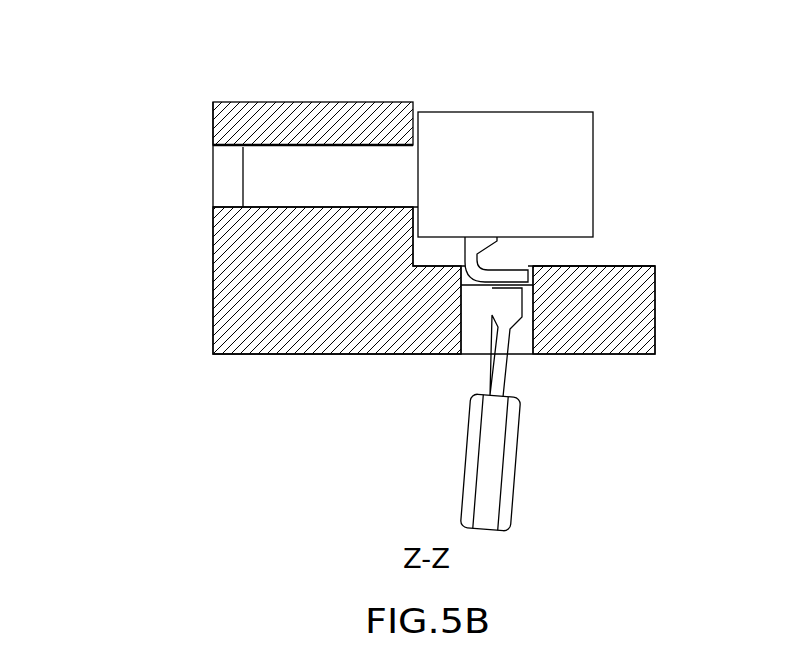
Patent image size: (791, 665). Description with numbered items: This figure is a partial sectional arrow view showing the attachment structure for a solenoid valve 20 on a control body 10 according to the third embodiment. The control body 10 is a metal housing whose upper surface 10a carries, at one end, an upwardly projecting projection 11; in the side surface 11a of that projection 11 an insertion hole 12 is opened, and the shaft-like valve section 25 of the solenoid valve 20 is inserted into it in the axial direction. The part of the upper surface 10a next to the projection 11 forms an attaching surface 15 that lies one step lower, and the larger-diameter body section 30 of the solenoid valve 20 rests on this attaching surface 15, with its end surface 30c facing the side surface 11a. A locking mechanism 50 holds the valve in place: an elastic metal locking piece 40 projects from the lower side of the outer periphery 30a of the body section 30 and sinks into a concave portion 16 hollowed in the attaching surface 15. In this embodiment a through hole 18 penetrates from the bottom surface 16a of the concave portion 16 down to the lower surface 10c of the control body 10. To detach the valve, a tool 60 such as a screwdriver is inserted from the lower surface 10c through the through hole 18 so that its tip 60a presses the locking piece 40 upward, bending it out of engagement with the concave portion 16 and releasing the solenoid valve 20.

The control body 10 is at (429, 271).
The upper surface 10a is at (573, 266).
The lower surface 10c is at (612, 355).
The projection 11 is at (323, 105).
The side surface 11a is at (414, 108).
The insertion hole 12 is at (231, 146).
The attaching surface 15 is at (620, 276).
The concave portion 16 is at (460, 281).
The bottom surface 16a is at (537, 270).
The through hole 18 is at (472, 298).
The solenoid valve 20 is at (545, 132).
The valve section 25 is at (329, 150).
The body section 30 is at (545, 141).
The outer periphery 30a is at (580, 155).
The end surface 30c is at (419, 112).
The locking piece 40 is at (490, 289).
The locking mechanism 50 is at (445, 396).
The tool 60 is at (526, 384).
The tip 60a is at (507, 281).